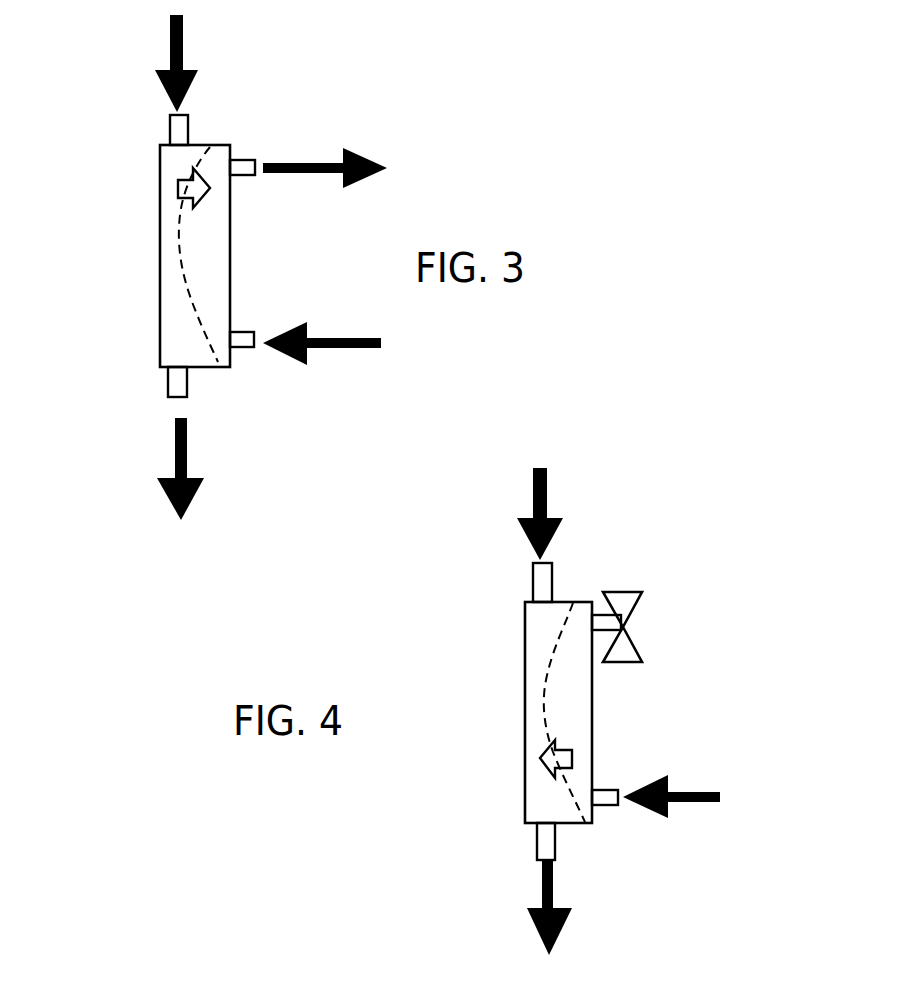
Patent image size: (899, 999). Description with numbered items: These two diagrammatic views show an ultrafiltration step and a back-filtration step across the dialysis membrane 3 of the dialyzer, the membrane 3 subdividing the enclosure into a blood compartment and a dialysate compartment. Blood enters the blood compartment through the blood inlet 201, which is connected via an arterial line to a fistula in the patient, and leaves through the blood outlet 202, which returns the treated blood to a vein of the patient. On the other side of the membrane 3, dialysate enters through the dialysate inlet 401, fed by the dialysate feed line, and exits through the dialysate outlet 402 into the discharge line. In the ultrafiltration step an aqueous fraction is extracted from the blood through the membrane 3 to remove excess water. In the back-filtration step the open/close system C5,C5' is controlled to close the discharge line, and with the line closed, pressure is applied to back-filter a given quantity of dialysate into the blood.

In FIG. 3, the dialysis membrane 3 is at (182, 263).
In FIG. 4, the dialysis membrane 3 is at (543, 715).
In FIG. 3, the blood inlet 201 is at (170, 118).
In FIG. 4, the blood inlet 201 is at (533, 572).
In FIG. 3, the blood outlet 202 is at (168, 392).
In FIG. 4, the blood outlet 202 is at (537, 840).
In FIG. 3, the dialysate inlet 401 is at (243, 348).
In FIG. 4, the dialysate inlet 401 is at (608, 805).
In FIG. 3, the dialysate outlet 402 is at (243, 158).
In FIG. 4, the dialysate outlet 402 is at (600, 632).
In FIG. 4, the upstream open/close members C5,C5' is at (672, 545).